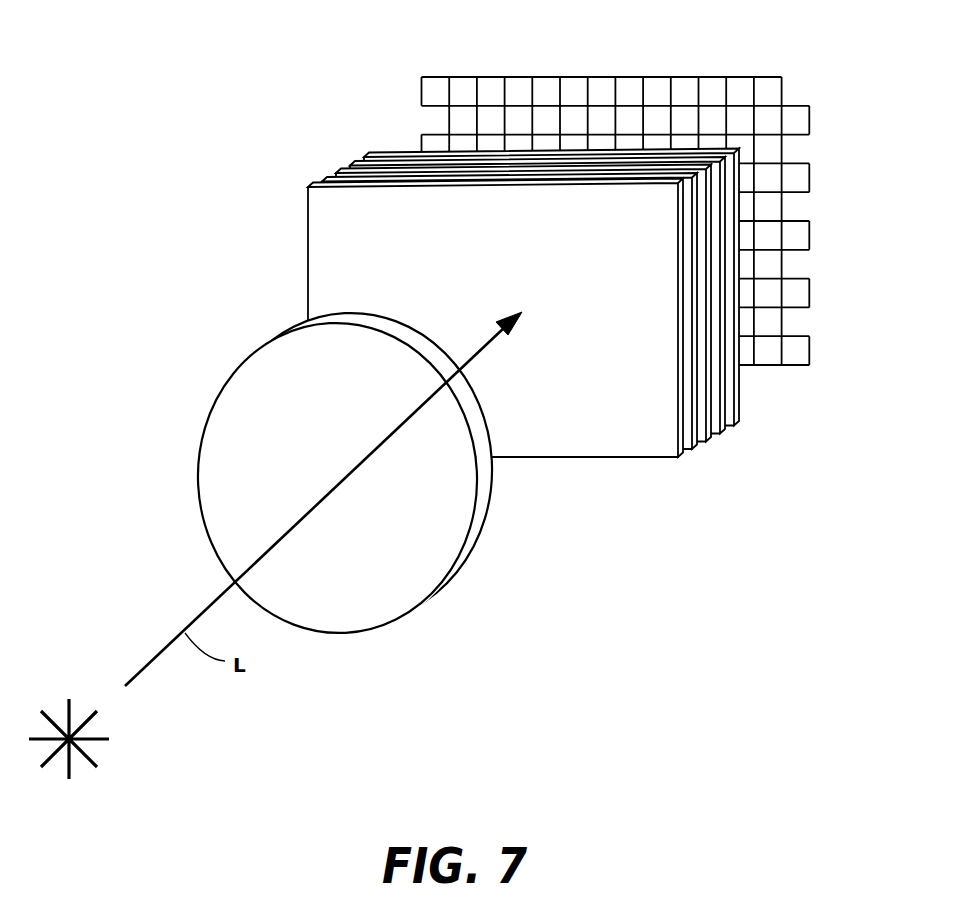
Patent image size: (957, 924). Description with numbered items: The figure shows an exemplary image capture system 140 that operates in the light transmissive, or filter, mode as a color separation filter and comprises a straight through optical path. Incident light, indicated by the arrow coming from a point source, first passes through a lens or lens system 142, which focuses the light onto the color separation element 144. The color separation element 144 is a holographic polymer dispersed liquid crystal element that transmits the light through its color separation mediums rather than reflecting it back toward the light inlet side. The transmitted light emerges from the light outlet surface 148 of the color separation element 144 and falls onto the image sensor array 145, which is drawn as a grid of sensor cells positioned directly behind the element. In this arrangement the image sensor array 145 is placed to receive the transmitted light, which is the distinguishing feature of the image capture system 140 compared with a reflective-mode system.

The image capture system 140 is at (586, 265).
The lens or lens system 142 is at (427, 573).
The color separation element 144 is at (650, 445).
The image sensor array 145 is at (793, 365).
The light outlet surface 148 is at (742, 410).